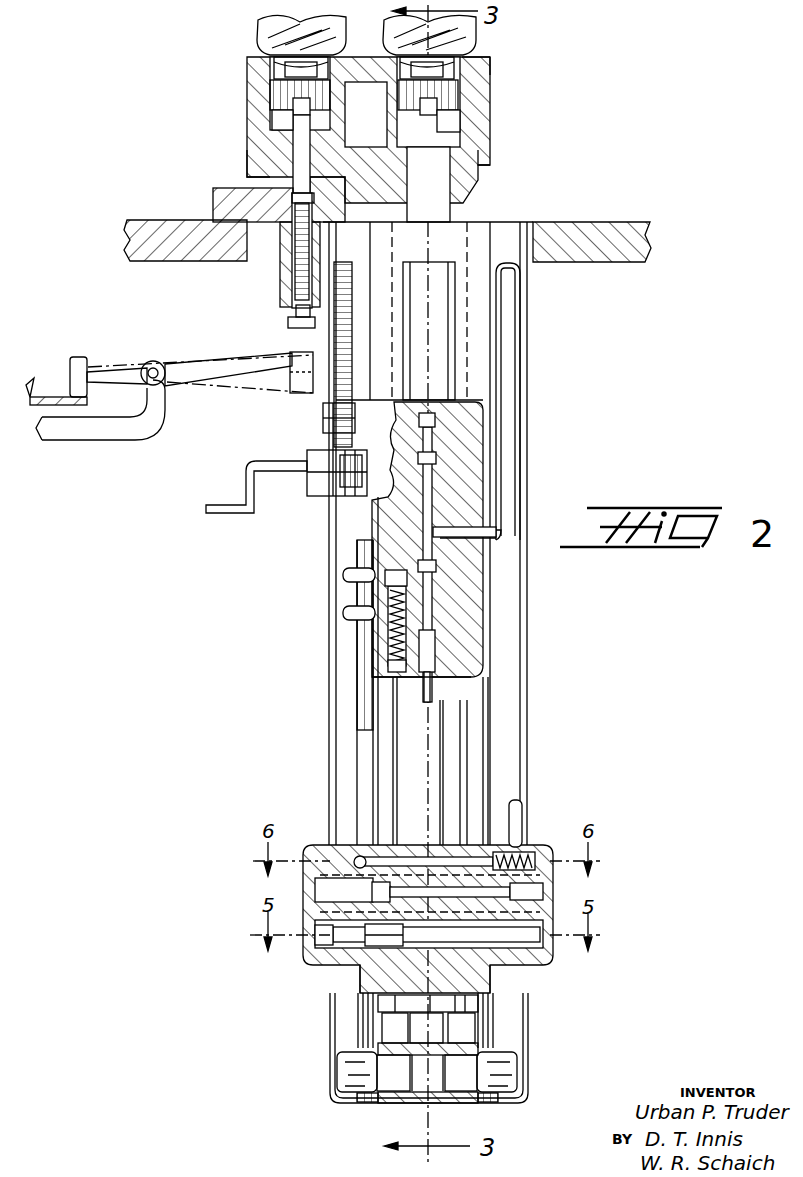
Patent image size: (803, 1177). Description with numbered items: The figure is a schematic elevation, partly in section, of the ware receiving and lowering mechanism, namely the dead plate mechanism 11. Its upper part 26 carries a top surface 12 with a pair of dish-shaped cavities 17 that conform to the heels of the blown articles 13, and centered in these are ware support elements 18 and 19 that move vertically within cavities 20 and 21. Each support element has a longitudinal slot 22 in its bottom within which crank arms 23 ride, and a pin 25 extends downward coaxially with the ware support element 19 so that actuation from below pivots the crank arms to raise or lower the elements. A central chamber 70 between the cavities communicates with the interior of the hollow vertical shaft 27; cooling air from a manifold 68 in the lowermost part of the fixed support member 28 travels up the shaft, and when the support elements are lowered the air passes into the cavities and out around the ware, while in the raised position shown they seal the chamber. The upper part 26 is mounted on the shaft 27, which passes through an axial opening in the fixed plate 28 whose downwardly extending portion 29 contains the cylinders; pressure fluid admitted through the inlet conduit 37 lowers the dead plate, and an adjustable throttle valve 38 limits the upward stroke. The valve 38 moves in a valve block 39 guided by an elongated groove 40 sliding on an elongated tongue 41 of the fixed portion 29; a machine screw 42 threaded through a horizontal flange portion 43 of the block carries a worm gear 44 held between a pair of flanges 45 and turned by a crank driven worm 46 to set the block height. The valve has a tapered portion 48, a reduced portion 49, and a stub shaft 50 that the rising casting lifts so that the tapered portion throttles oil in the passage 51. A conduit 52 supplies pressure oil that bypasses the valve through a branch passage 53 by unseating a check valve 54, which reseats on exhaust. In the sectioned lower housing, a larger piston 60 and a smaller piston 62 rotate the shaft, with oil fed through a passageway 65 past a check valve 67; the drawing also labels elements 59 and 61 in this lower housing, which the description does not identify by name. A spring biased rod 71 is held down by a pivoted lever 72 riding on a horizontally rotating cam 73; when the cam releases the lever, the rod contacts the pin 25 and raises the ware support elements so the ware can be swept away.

The dead plate mechanism 11 is at (498, 84).
The top surface 12 is at (478, 60).
The blown articles 13 is at (330, 30).
The dish-shaped cavities 17 is at (333, 54).
The ware support element 18 is at (490, 63).
The ware support element 19 is at (290, 71).
The cavity 20 is at (457, 126).
The cavity 21 is at (270, 114).
The longitudinal slot 22 is at (292, 104).
The crank arms 23 is at (300, 110).
The pin 25 is at (266, 170).
The upper part 26 is at (490, 155).
The hollow vertical shaft 27 is at (470, 205).
The fixed support member 28 is at (547, 214).
The downwardly extending portion 29 is at (515, 713).
The inlet conduit 37 is at (360, 614).
The adjustable throttle valve 38 is at (440, 645).
The valve block 39 is at (465, 470).
The elongated groove 40 is at (450, 604).
The elongated tongue 41 is at (440, 316).
The machine screw 42 is at (340, 378).
The horizontal flange portion 43 is at (330, 421).
The worm gear 44 is at (330, 480).
The flanges 45 is at (323, 460).
The crank driven worm 46 is at (278, 464).
The tapered portion 48 is at (400, 662).
The reduced portion 49 is at (440, 588).
The stub shaft 50 is at (441, 687).
The passage 51 is at (425, 598).
The conduit 52 is at (345, 575).
The branch passage 53 is at (390, 583).
The check valve 54 is at (395, 600).
The lower housing 59 is at (345, 963).
The piston 60 is at (523, 965).
The shaft 61 is at (543, 950).
The piston 62 is at (550, 872).
The passageway 65 is at (433, 860).
The check valve 67 is at (523, 843).
The manifold 68 is at (390, 1050).
The central chamber 70 is at (388, 105).
The spring biased rod 71 is at (282, 215).
The pivoted lever 72 is at (237, 366).
The horizontally rotating cam 73 is at (48, 395).